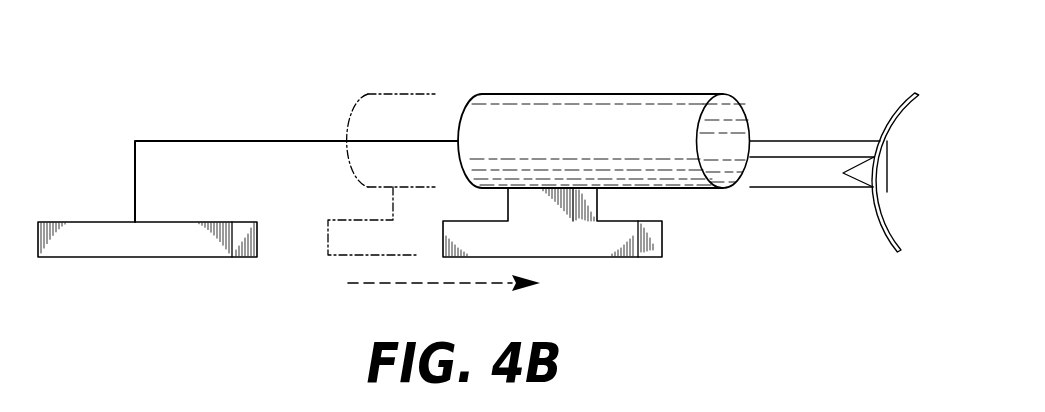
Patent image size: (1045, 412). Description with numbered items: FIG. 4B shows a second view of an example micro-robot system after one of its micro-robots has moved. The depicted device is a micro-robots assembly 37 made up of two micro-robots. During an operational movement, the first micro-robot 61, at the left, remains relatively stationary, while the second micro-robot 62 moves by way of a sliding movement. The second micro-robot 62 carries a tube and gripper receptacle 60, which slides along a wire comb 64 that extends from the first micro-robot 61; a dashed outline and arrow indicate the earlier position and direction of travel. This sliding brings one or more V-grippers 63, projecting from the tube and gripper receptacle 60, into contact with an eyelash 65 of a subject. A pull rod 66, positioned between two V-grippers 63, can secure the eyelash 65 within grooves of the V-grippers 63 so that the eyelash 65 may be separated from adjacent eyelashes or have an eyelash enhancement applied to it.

The micro-robots assembly 37 is at (116, 101).
The tube and gripper receptacle 60 is at (643, 93).
The first micro-robot 61 is at (117, 258).
The second micro-robot 62 is at (587, 248).
The V-grippers 63 is at (798, 177).
The wire comb 64 is at (212, 140).
The eyelash 65 is at (897, 120).
The pull rod 66 is at (888, 167).